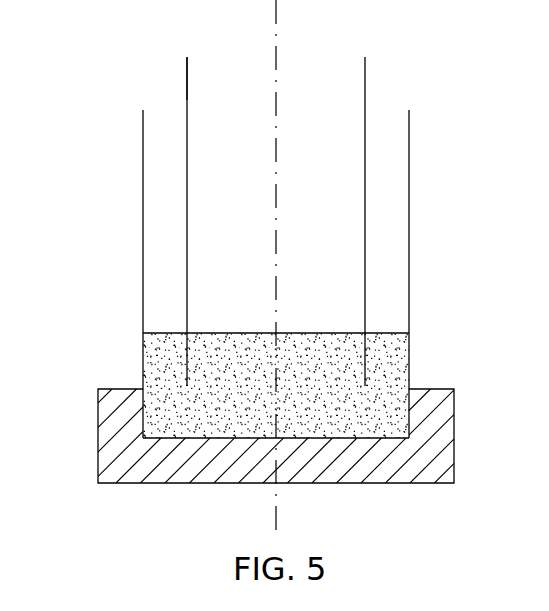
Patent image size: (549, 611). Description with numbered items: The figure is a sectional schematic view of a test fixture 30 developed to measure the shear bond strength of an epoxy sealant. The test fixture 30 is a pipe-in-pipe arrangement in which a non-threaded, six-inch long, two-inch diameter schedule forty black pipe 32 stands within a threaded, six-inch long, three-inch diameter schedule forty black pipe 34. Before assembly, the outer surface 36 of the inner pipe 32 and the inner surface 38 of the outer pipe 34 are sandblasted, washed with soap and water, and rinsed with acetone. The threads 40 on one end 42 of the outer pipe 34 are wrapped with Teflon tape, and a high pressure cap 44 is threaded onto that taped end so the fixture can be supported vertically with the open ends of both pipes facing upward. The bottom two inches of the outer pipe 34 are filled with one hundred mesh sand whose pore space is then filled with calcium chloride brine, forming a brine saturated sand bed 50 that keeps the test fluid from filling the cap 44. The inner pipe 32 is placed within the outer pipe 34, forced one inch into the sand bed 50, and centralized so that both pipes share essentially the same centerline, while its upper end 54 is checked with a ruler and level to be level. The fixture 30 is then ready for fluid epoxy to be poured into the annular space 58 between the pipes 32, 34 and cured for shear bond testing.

The test fixture 30 is at (484, 70).
The black pipe 32 is at (186, 72).
The black pipe 34 is at (143, 150).
The outer surface 36 is at (366, 78).
The inner surface 38 is at (409, 213).
The threads 40 is at (410, 424).
The end 42 is at (407, 438).
The high pressure cap 44 is at (112, 428).
The brine saturated sand bed 50 is at (157, 366).
The upper end 54 is at (188, 57).
The annular space 58 is at (161, 240).